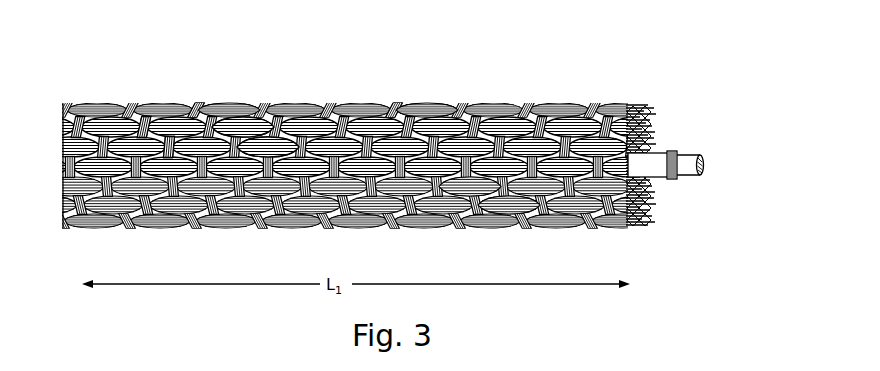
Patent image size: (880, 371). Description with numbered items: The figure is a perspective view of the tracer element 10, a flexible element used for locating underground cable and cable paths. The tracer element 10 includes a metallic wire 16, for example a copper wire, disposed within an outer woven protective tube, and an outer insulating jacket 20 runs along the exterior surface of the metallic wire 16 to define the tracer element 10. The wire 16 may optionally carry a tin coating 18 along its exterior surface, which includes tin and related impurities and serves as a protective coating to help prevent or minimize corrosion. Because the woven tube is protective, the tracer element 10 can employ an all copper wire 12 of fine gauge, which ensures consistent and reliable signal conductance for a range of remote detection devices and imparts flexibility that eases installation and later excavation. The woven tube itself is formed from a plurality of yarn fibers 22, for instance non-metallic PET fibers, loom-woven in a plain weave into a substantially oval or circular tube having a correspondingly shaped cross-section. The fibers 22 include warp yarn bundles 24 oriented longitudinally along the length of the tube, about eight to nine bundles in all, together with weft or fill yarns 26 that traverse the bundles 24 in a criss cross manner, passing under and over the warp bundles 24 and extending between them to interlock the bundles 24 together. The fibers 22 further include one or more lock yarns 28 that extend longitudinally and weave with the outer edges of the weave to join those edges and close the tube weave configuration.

The tracer element 10 is at (128, 89).
The all copper wire 12 is at (675, 177).
The metallic wire 16 is at (696, 156).
The tin coating 18 is at (675, 178).
The outer insulating jacket 20 is at (661, 152).
The yarn fibers 22 is at (497, 212).
The warp yarn bundles 24 is at (282, 137).
The weft or fill yarns 26 is at (193, 110).
The lock yarns 28 is at (435, 108).